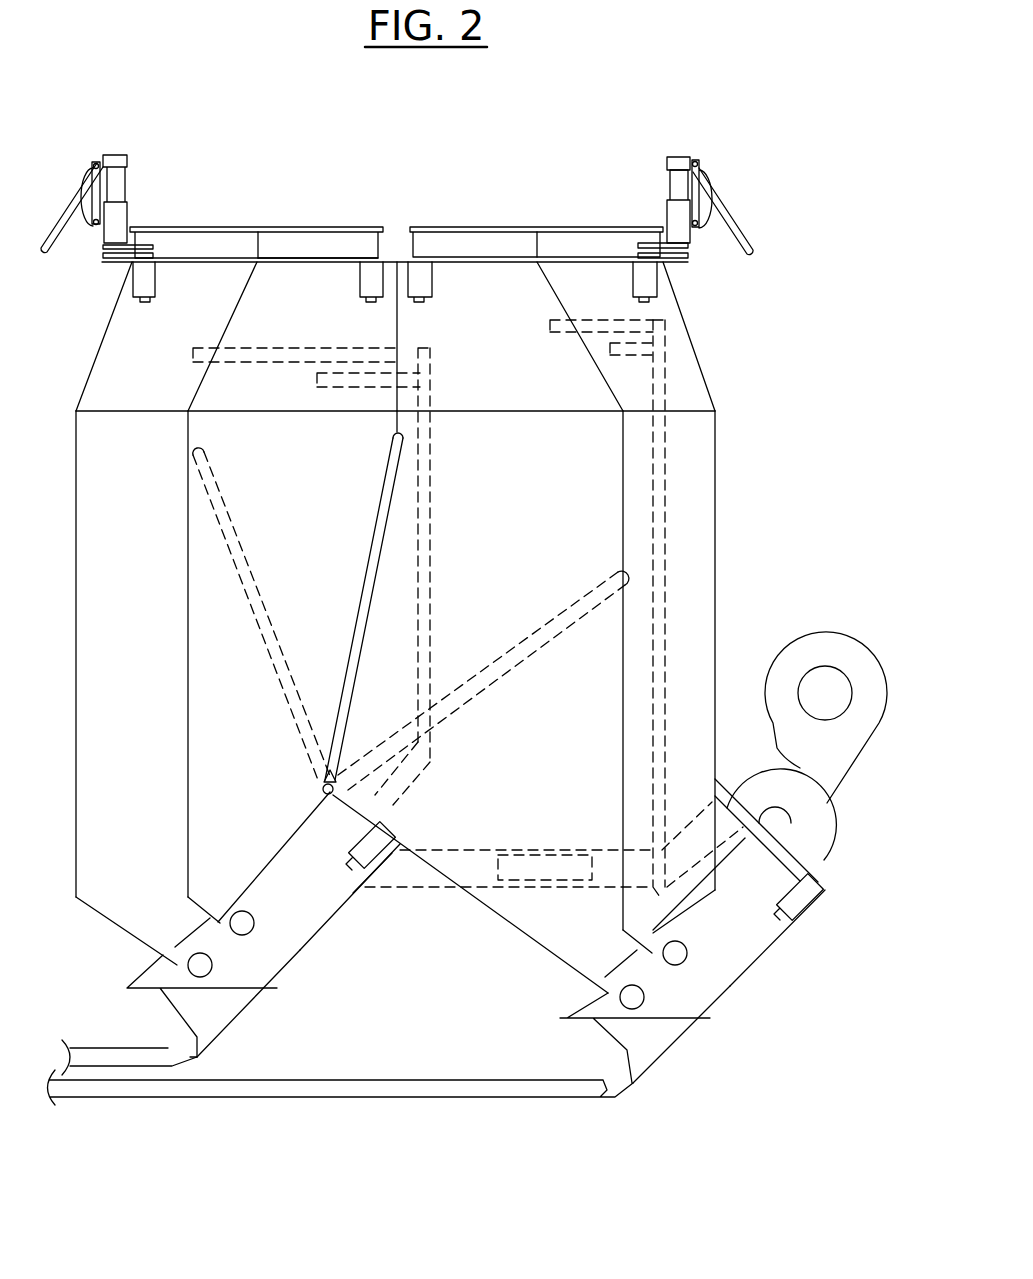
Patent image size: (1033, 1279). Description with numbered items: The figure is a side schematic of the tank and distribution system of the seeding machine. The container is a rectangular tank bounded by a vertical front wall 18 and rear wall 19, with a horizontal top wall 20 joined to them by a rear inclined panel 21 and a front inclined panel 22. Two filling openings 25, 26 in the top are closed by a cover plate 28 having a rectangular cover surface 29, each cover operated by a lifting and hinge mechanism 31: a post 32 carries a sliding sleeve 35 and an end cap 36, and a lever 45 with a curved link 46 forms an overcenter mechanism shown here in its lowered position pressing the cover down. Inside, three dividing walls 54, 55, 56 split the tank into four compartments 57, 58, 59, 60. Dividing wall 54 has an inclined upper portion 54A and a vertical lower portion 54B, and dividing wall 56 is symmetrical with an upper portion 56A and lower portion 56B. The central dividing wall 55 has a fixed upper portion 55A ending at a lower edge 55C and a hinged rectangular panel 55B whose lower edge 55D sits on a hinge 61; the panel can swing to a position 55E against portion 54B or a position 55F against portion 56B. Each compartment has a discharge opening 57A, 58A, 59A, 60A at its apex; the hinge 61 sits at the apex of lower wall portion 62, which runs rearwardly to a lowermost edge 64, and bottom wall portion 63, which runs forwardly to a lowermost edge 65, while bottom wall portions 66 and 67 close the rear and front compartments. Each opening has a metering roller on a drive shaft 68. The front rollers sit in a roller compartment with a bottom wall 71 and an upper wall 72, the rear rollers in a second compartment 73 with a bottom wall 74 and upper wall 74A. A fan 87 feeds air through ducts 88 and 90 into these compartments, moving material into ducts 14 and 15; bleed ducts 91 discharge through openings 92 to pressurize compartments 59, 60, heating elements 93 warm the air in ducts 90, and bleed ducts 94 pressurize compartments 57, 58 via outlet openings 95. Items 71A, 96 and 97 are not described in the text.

The ducts 14 is at (355, 1078).
The ducts 15 is at (138, 1048).
The front wall 18 is at (718, 522).
The rear wall 19 is at (76, 700).
The top wall 20 is at (268, 262).
The rear inclined panel 21 is at (105, 333).
The front inclined panel 22 is at (690, 332).
The opening 25 is at (187, 260).
The opening 26 is at (465, 258).
The cover plate 28 is at (302, 222).
The rectangular cover surface 29 is at (488, 228).
The lifting and hinge mechanism 31 is at (146, 186).
The post 32 is at (670, 190).
The sleeve 35 is at (692, 237).
The end cap 36 is at (682, 157).
The lever 45 is at (740, 238).
The link 46 is at (712, 192).
The dividing wall 54 is at (198, 408).
The upper portion of dividing wall 54A is at (199, 385).
The lower portion of dividing wall 54B is at (186, 592).
The dividing wall 55 is at (393, 425).
The upper portion of dividing wall 55A is at (398, 324).
The lower portion of dividing wall 55B is at (372, 512).
The lower edge of upper portion 55C is at (418, 432).
The lower edge of panel 55D is at (322, 790).
The first alternative position of panel 55E is at (258, 588).
The third alternative position of panel 55F is at (543, 617).
The dividing wall 56 is at (620, 408).
The upper portion of dividing wall 56A is at (583, 343).
The lower portion of dividing wall 56B is at (620, 480).
The rear compartment 57 is at (117, 797).
The discharge opening 57A is at (185, 943).
The compartment 58 is at (217, 734).
The discharge opening 58A is at (218, 910).
The compartment 59 is at (502, 772).
The discharge opening 59A is at (600, 983).
The compartment 60 is at (674, 714).
The discharge opening 60A is at (670, 935).
The hinge 61 is at (335, 805).
The lower wall portion 62 is at (262, 876).
The bottom wall portion 63 is at (488, 912).
The lowermost edge 64 is at (152, 961).
The lowermost edge 65 is at (595, 993).
The bottom wall portion 66 is at (100, 912).
The bottom wall portion 67 is at (698, 893).
The drive shaft 68 is at (242, 935).
The bottom wall 71 is at (772, 956).
The right brace lower edge 71A is at (720, 990).
The upper wall 72 is at (820, 882).
The second compartment 73 is at (318, 944).
The bottom wall 74 is at (280, 972).
The upper wall 74A is at (355, 893).
The fan 87 is at (825, 637).
The air ducts 88 is at (825, 832).
The air ducts 90 is at (797, 773).
The bleed ducts 91 is at (652, 640).
The openings 92 is at (550, 326).
The heating element 93 is at (522, 865).
The bleed ducts 94 is at (432, 560).
The outlet openings 95 is at (193, 350).
The nut 96 is at (375, 838).
The foot 97 is at (133, 283).